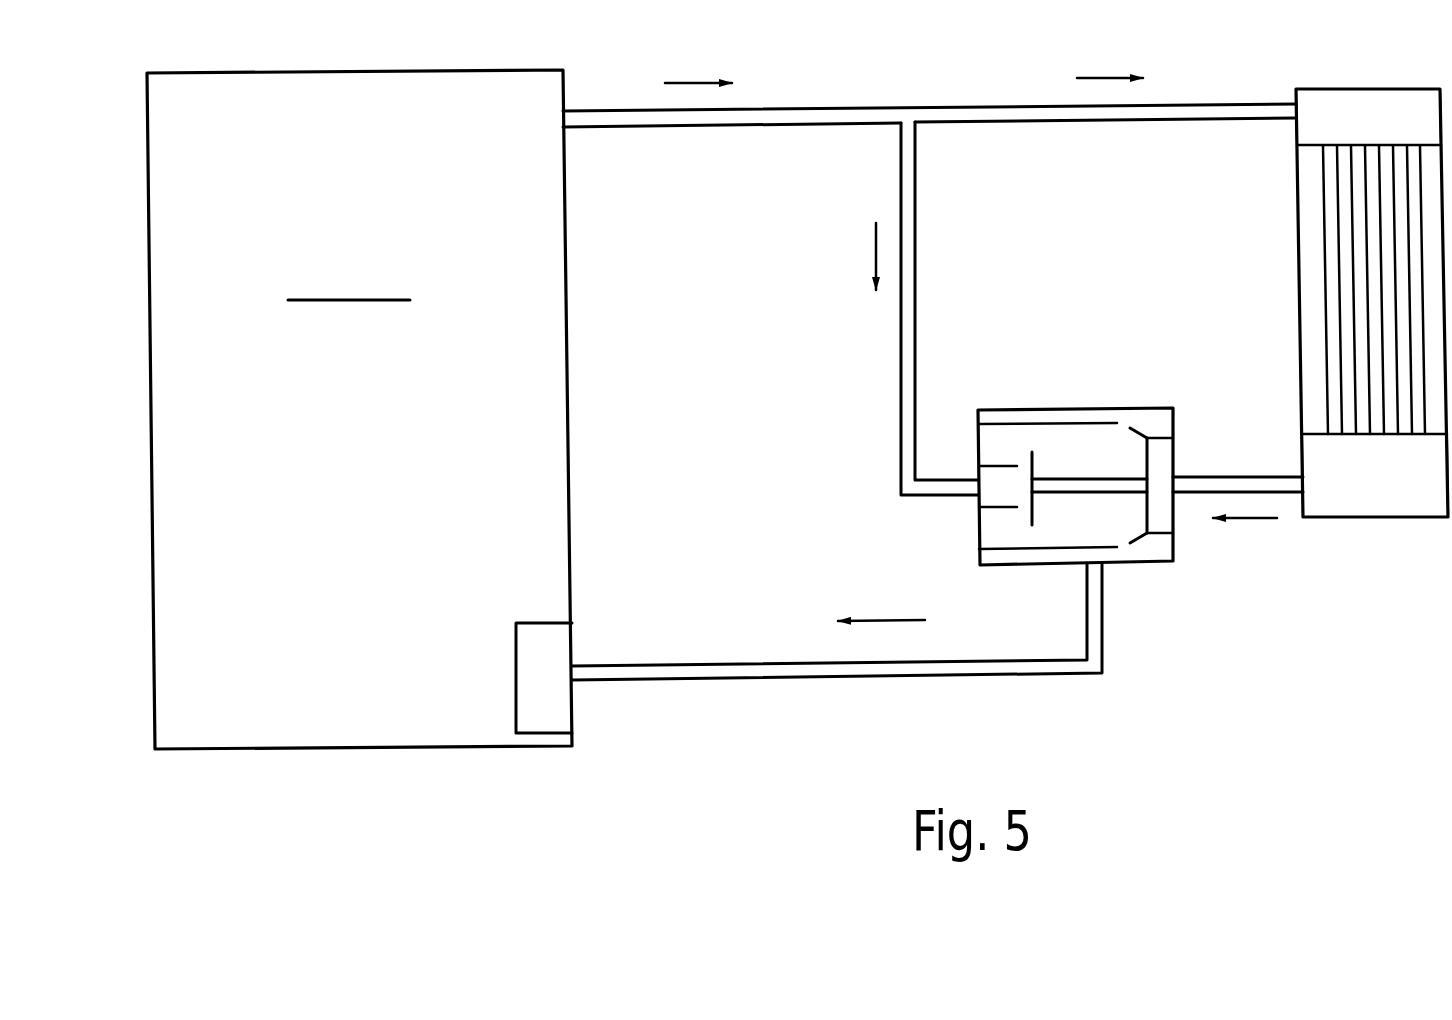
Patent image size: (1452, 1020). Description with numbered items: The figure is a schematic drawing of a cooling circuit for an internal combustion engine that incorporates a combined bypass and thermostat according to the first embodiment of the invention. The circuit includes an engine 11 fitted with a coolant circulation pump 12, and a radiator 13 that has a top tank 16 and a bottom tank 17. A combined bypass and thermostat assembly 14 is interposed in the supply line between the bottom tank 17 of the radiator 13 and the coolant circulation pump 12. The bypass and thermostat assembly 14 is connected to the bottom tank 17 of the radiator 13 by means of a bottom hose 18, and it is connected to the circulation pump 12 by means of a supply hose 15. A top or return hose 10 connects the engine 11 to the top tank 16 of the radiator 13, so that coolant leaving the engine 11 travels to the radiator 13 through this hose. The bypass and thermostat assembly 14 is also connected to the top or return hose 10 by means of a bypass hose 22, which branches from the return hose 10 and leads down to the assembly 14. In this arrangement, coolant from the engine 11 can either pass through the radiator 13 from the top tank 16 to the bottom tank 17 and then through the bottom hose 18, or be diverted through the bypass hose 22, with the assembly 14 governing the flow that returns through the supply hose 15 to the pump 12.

The top or return hose 10 is at (845, 108).
The engine 11 is at (569, 421).
The coolant circulation pump 12 is at (575, 696).
The radiator 13 is at (1296, 247).
The combined bypass and thermostat assembly 14 is at (1158, 571).
The supply hose 15 is at (730, 663).
The top tank 16 is at (1332, 88).
The bottom tank 17 is at (1386, 518).
The bottom hose 18 is at (1242, 476).
The bypass hose 22 is at (916, 256).